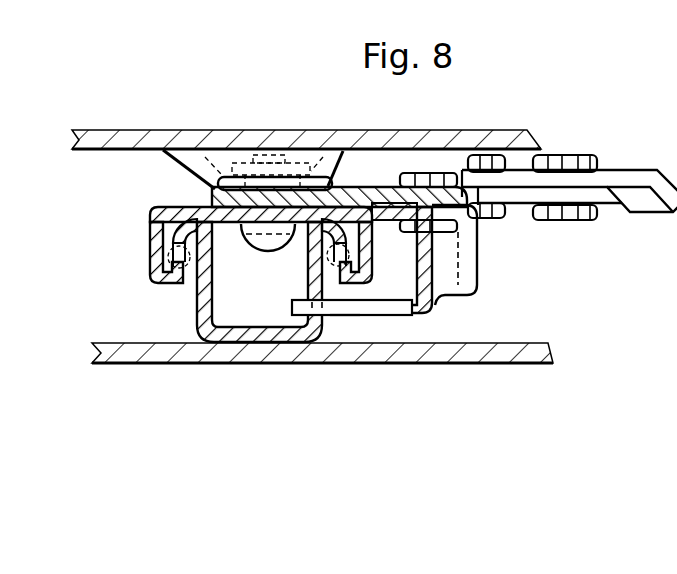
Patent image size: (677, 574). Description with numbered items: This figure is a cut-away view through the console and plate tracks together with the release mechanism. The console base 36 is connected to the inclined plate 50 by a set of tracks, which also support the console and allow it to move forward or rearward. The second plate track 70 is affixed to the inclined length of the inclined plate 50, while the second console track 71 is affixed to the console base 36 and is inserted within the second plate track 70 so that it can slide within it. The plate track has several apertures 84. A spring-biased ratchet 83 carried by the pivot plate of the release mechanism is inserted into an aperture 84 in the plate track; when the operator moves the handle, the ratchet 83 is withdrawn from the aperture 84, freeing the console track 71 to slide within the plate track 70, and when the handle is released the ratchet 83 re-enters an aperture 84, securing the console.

The console base 36 is at (175, 140).
The inclined plate 50 is at (532, 343).
The second plate track 70 is at (152, 236).
The second console track 71 is at (198, 322).
The ratchet 83 is at (345, 316).
The aperture 84 is at (310, 298).